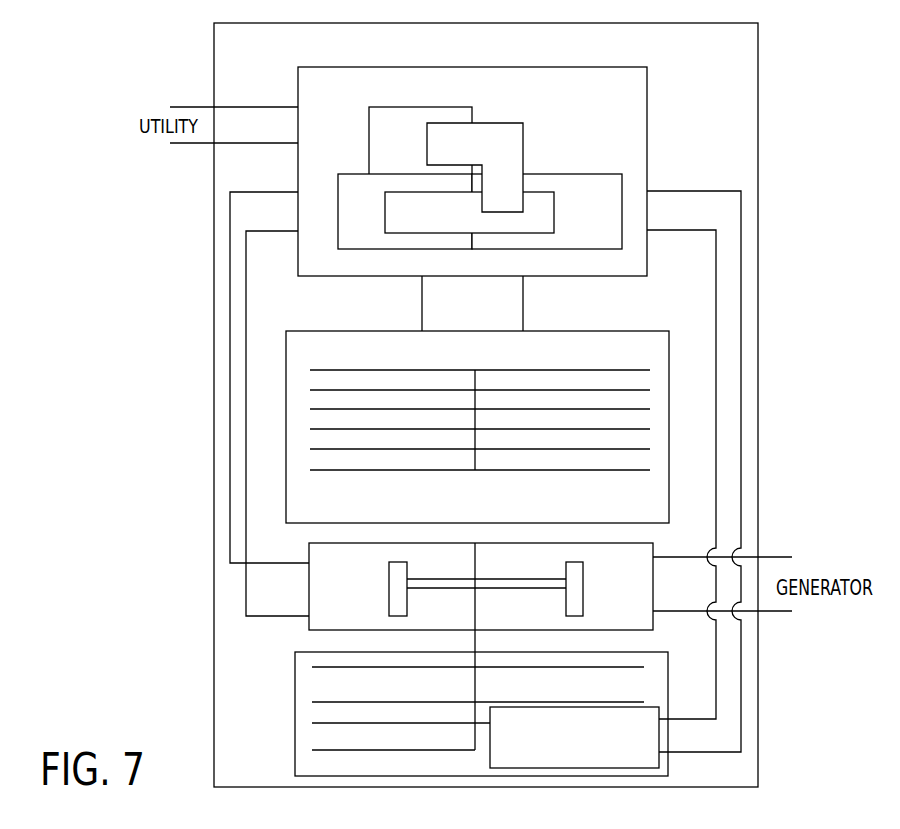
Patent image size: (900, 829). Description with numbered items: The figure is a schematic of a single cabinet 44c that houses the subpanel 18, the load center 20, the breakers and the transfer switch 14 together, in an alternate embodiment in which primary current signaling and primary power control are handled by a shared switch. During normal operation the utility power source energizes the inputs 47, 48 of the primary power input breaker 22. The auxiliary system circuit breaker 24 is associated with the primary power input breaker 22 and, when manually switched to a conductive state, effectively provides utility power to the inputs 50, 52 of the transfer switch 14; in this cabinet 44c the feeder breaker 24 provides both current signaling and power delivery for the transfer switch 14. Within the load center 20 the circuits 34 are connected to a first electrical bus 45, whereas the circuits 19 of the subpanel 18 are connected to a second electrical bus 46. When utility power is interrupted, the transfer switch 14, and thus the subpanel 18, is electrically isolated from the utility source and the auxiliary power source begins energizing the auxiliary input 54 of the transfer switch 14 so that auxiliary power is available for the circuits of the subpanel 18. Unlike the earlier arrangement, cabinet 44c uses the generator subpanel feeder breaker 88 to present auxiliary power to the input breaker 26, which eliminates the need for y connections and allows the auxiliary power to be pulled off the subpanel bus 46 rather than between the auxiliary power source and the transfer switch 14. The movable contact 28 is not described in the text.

The transfer switch 14 is at (315, 621).
The subpanel 18 is at (297, 742).
The circuits 19 is at (502, 668).
The load center 20 is at (645, 343).
The primary power input breaker 22 is at (420, 106).
The auxiliary system circuit breaker 24 is at (355, 174).
The auxiliary system feeder breaker 26 is at (573, 174).
The movable contact 28 is at (523, 142).
The circuits 34 is at (555, 388).
The cabinet 44c is at (758, 62).
The first electrical bus 45 is at (475, 376).
The second electrical bus 46 is at (476, 678).
The input 47 is at (233, 108).
The input 48 is at (233, 144).
The input 50 is at (300, 560).
The input 52 is at (277, 617).
The auxiliary input 54 is at (663, 556).
The generator subpanel feeder breaker 88 is at (583, 707).